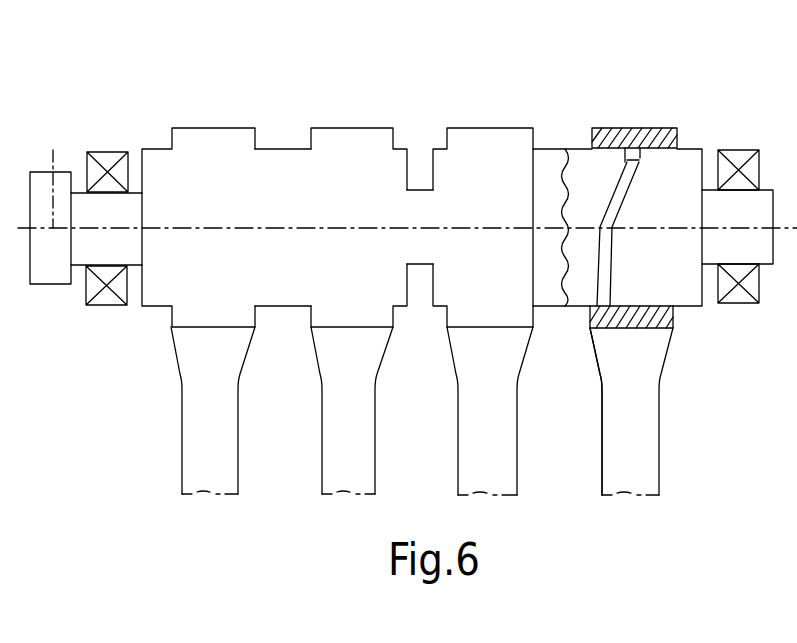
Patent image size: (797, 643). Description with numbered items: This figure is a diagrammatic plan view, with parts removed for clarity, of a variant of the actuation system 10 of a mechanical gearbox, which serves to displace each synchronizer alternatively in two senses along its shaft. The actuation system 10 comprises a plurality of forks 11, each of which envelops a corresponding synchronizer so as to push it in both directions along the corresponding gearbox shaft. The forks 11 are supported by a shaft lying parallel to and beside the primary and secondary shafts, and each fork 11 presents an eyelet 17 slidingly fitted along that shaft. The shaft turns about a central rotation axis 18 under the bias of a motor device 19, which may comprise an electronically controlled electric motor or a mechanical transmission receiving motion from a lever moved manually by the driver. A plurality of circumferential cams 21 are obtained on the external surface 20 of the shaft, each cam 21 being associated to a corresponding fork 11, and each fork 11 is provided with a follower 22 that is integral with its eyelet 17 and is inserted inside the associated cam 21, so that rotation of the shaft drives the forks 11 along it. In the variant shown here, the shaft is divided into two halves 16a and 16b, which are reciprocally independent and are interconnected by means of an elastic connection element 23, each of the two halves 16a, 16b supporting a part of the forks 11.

The actuation system 10 is at (414, 88).
The fork 11 is at (370, 470).
The half of the shaft 16a is at (278, 430).
The half of the shaft 16b is at (551, 430).
The eyelet 17 is at (653, 300).
The central rotation axis 18 is at (53, 175).
The motor device 19 is at (46, 275).
The external surface 20 is at (282, 158).
The circumferential cam 21 is at (600, 284).
The follower 22 is at (642, 158).
The elastic connection element 23 is at (416, 200).